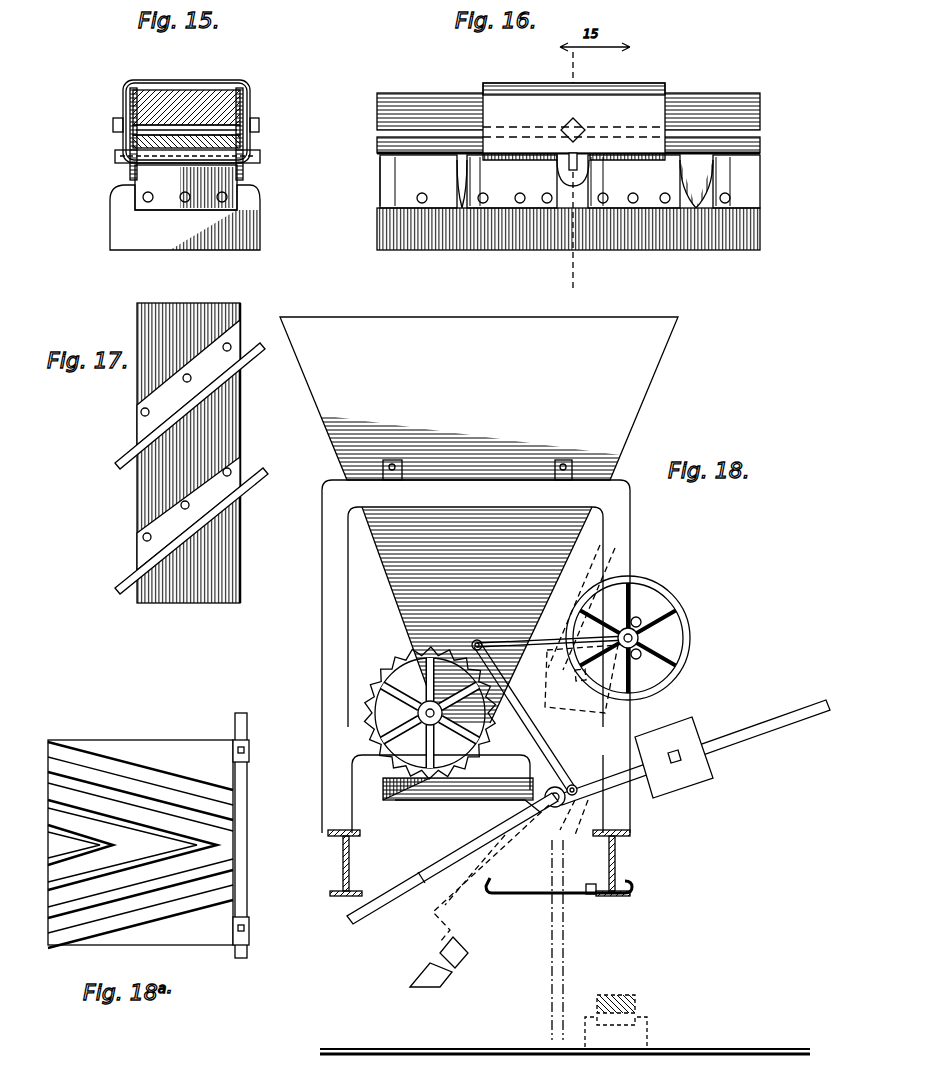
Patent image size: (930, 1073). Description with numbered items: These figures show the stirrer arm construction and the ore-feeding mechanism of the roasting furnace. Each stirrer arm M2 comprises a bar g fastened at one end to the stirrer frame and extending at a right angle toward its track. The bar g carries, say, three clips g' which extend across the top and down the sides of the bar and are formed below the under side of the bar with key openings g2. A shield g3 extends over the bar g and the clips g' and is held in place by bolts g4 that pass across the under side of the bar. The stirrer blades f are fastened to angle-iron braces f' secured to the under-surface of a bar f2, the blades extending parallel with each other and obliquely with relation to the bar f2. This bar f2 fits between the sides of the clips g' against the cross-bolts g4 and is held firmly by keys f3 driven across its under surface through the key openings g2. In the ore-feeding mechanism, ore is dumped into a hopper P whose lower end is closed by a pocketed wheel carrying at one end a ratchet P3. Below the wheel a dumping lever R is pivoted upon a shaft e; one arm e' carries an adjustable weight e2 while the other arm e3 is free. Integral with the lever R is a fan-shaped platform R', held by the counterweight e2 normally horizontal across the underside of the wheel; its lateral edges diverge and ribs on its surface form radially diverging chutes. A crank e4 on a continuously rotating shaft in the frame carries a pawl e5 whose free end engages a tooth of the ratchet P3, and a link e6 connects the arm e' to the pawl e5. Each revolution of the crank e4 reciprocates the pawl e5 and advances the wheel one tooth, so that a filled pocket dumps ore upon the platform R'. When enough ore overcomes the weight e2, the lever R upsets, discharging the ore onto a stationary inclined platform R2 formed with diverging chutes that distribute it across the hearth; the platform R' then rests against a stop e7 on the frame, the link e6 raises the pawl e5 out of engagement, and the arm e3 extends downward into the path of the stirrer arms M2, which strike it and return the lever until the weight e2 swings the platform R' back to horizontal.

In FIG. 15, the stirrer arm M2 is at (120, 49).
In FIG. 16, the stirrer arm M2 is at (417, 59).
In FIG. 17, the stirrer arm M2 is at (156, 453).
In FIG. 18, the stirrer arm M2 is at (635, 995).
In FIG. 15, the bar g is at (199, 121).
In FIG. 16, the bar g is at (568, 91).
In FIG. 15, the clips g' is at (217, 115).
In FIG. 16, the clips g' is at (574, 170).
In FIG. 16, the key openings g2 is at (569, 163).
In FIG. 15, the shield g3 is at (133, 108).
In FIG. 16, the shield g3 is at (640, 83).
In FIG. 15, the bolts g4 is at (186, 130).
In FIG. 16, the bolts g4 is at (580, 125).
In FIG. 15, the stirrer blades f is at (201, 217).
In FIG. 16, the stirrer blades f is at (568, 227).
In FIG. 17, the stirrer blades f is at (191, 468).
In FIG. 18, the stirrer blades f is at (638, 1025).
In FIG. 15, the angle-iron braces f' is at (157, 189).
In FIG. 16, the angle-iron braces f' is at (570, 201).
In FIG. 17, the angle-iron braces f' is at (188, 445).
In FIG. 15, the bar f2 is at (240, 142).
In FIG. 16, the bar f2 is at (760, 145).
In FIG. 17, the bar f2 is at (145, 497).
In FIG. 15, the keys f3 is at (115, 156).
In FIG. 18, the hopper P is at (479, 398).
In FIG. 18, the ratchet P3 is at (390, 678).
In FIG. 18, the shaft e is at (567, 807).
In FIG. 18A, the shaft e is at (252, 835).
In FIG. 18, the lever arm e' is at (694, 743).
In FIG. 18, the adjustable weight e2 is at (690, 735).
In FIG. 18, the free lever arm e3 is at (400, 898).
In FIG. 18, the crank e4 is at (640, 634).
In FIG. 18, the pawl e5 is at (570, 628).
In FIG. 18, the link e6 is at (542, 700).
In FIG. 18, the stop e7 is at (610, 897).
In FIG. 18, the dumping lever R is at (458, 777).
In FIG. 18, the fan-shaped platform R' is at (467, 825).
In FIG. 18A, the fan-shaped platform R' is at (126, 844).
In FIG. 18, the stationary inclined platform R2 is at (440, 950).
In FIG. 18, the machine frame is at (476, 688).